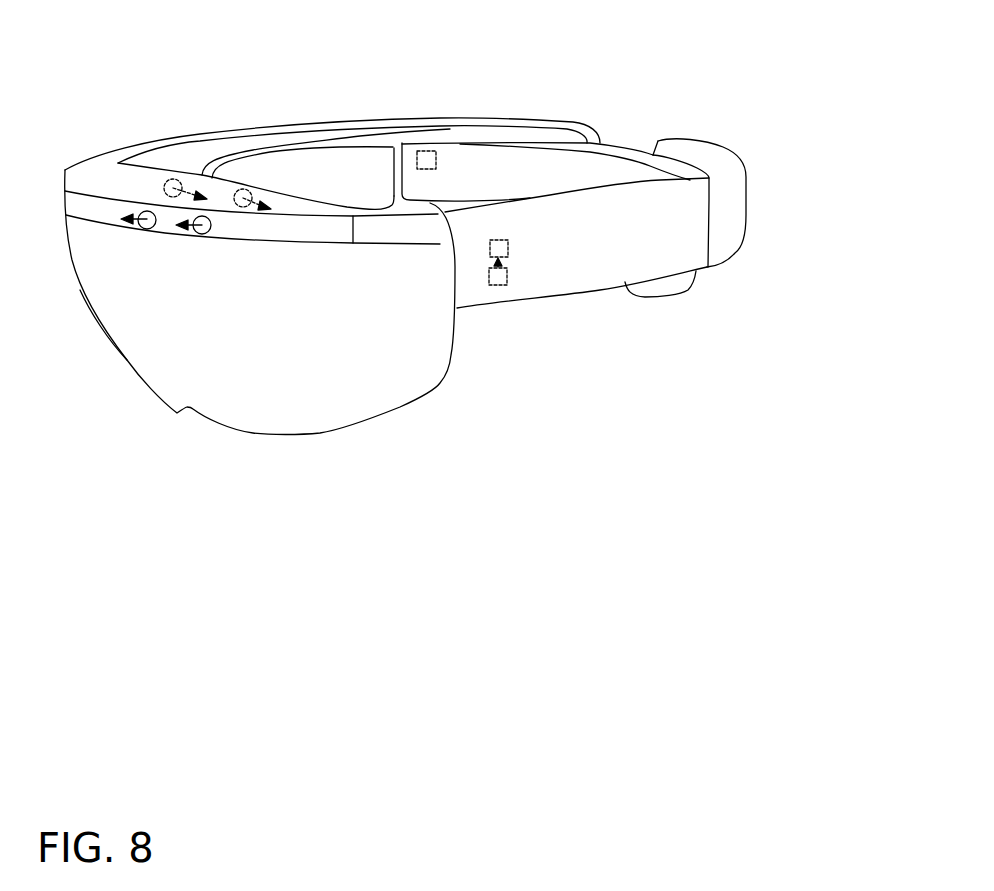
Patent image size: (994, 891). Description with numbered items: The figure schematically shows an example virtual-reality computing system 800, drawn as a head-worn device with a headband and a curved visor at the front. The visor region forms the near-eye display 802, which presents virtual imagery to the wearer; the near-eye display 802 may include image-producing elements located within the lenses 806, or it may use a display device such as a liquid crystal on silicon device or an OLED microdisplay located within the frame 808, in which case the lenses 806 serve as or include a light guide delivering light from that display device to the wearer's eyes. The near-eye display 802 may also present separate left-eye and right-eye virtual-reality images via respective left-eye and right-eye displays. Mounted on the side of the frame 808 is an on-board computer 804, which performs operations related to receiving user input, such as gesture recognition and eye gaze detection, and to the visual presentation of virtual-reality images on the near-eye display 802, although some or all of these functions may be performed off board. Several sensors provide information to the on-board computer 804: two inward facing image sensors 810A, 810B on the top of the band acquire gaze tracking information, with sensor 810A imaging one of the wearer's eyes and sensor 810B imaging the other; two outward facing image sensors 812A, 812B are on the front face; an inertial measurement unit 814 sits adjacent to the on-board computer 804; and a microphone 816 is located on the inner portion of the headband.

The virtual-reality computing system 800 is at (591, 56).
The near-eye display 802 is at (86, 324).
The on-board computer 804 is at (500, 238).
The lenses 806 is at (143, 385).
The frame 808 is at (475, 311).
The inward facing image sensor 810A is at (243, 207).
The inward facing image sensor 810B is at (162, 185).
The outward facing image sensor 812A is at (202, 234).
The outward facing image sensor 812B is at (147, 229).
The inertial measurement unit 814 is at (509, 276).
The microphone 816 is at (427, 149).